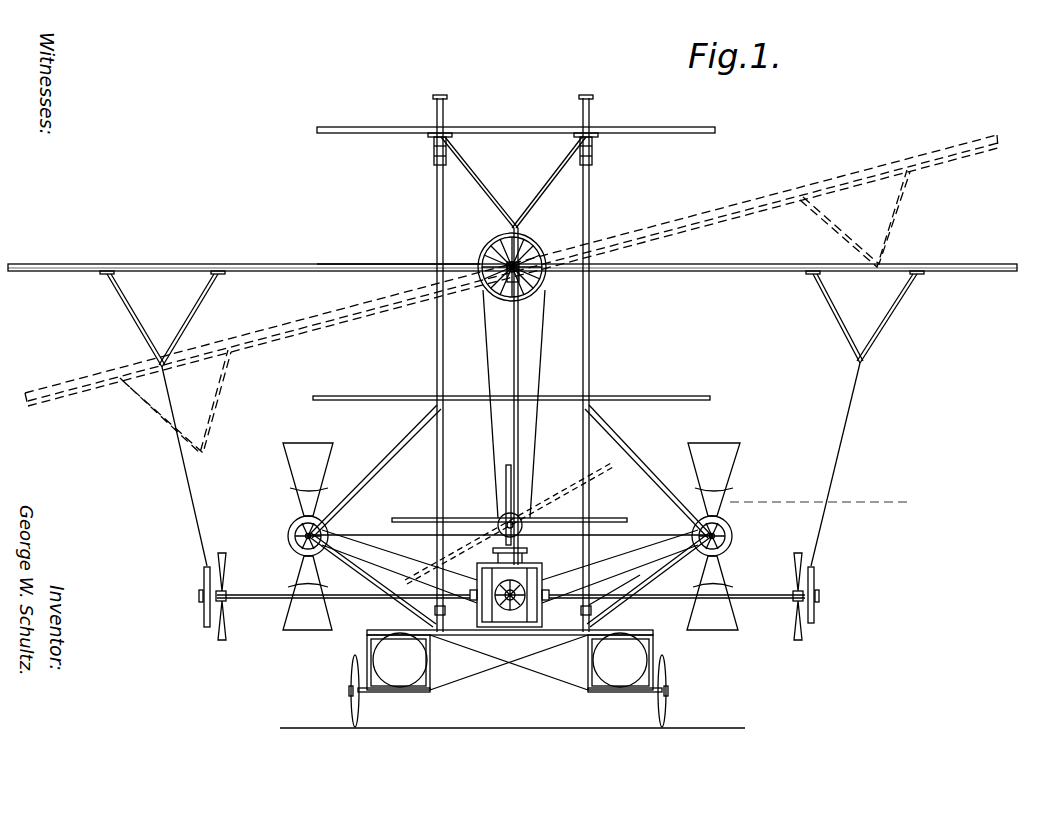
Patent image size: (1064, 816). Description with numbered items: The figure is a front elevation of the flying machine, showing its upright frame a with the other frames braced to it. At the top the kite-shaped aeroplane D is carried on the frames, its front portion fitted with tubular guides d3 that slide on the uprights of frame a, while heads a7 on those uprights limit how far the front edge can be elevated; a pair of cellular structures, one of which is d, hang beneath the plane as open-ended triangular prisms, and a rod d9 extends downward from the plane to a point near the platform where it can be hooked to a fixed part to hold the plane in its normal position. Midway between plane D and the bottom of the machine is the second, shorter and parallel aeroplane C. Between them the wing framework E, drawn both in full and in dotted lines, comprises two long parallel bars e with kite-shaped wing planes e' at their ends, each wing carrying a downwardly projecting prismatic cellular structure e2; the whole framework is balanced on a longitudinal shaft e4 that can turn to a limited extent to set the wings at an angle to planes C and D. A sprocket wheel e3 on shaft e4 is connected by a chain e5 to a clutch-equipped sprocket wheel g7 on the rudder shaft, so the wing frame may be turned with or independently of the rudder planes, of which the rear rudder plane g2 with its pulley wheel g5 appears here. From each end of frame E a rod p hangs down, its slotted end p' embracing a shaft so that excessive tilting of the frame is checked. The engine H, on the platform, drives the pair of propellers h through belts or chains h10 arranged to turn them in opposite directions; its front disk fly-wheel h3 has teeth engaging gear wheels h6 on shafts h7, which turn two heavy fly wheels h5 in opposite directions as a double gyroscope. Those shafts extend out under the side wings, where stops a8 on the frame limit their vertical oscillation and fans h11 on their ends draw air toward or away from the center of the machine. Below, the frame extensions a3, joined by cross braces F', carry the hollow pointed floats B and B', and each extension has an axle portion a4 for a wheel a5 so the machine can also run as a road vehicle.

The upright frame a is at (437, 348).
The heads a7 is at (440, 95).
The top aeroplane D is at (528, 127).
The tubular guides d3 is at (434, 155).
The cellular structure d is at (534, 200).
The rod d9 is at (514, 372).
The shaft e4 is at (490, 256).
The framework E is at (512, 280).
The parallel bars e is at (398, 253).
The kite-shaped planes e' is at (512, 285).
The prismatic cellular structure e2 is at (140, 328).
The sprocket wheel e3 is at (494, 300).
The chain e5 is at (538, 378).
The downwardly extending rod p is at (503, 464).
The second aeroplane C is at (387, 396).
The pulley wheel g5 is at (506, 482).
The sprocket wheel g7 is at (498, 516).
The rear rudder plane g2 is at (412, 518).
The belts or chains h10 is at (332, 530).
The propellers h is at (300, 478).
The fly wheels h5 is at (477, 583).
The engine H is at (524, 564).
The disk fly-wheel h3 is at (525, 573).
The shafts h7 is at (346, 598).
The gear wheels h6 is at (492, 598).
The slotted portion p' is at (509, 588).
The screws or fans h11 is at (222, 620).
The frame extensions a3 is at (374, 630).
The cross braces F' is at (509, 662).
The stops a8 is at (595, 608).
The hollow pointed cylinder B is at (400, 660).
The hollow pointed cylinder B' is at (620, 660).
The axle portion a4 is at (385, 692).
The wheel a5 is at (351, 676).